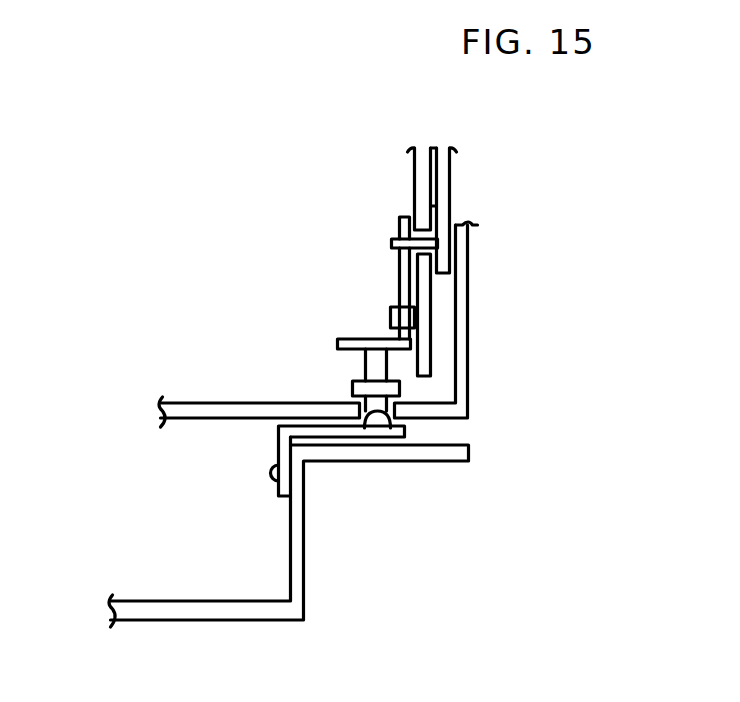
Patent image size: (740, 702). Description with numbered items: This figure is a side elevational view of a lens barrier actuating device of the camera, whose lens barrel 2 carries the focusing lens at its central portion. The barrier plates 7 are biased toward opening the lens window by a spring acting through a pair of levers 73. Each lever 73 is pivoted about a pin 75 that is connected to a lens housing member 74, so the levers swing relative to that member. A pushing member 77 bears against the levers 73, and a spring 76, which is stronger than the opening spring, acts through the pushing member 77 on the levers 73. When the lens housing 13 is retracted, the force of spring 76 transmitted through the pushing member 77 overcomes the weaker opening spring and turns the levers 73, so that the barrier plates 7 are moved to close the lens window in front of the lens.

The barrier plate 7 is at (442, 192).
The lens housing 13 is at (464, 384).
The lever 73 is at (398, 275).
The lens housing member 74 is at (422, 297).
The pin 75 is at (402, 320).
The pushing member 77 is at (377, 365).
The spring 76 is at (338, 434).
The lens barrel 2 is at (432, 453).